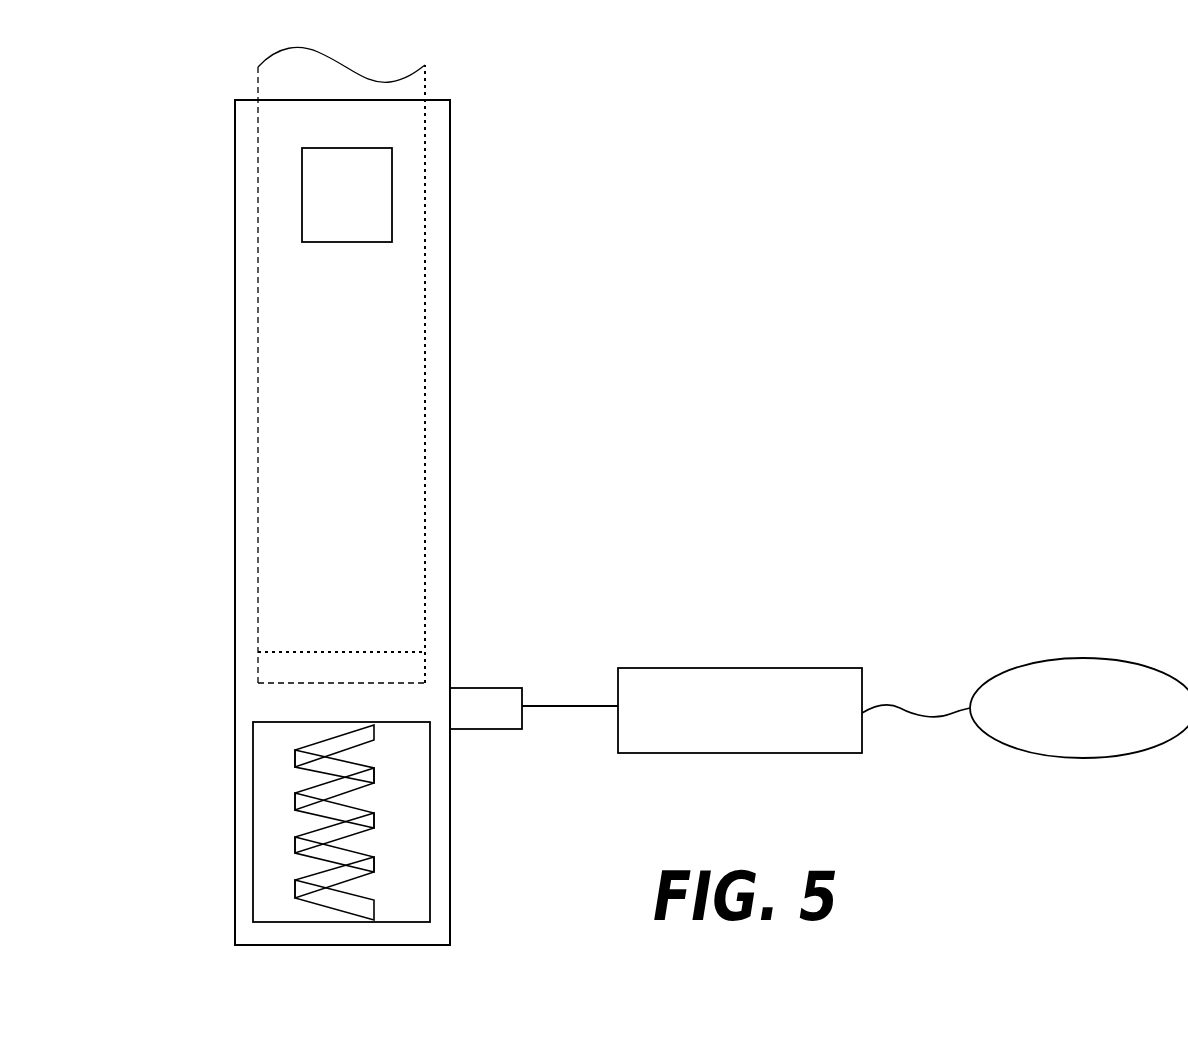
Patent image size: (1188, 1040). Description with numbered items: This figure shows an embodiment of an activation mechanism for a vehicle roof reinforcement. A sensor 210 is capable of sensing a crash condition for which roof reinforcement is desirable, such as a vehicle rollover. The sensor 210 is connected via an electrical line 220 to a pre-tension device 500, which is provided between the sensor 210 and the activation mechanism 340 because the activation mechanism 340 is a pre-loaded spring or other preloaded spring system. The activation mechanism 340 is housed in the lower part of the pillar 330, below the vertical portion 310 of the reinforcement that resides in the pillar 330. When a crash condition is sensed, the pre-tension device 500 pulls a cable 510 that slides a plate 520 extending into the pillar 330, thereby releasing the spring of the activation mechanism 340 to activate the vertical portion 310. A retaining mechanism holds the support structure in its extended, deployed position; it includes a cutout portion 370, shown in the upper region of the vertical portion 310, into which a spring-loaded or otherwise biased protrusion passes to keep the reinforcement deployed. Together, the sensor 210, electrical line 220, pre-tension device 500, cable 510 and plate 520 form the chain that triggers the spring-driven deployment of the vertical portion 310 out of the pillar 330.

The sensor 210 is at (1107, 658).
The electrical line 220 is at (927, 720).
The vertical portion 310 is at (425, 66).
The pillar 330 is at (440, 372).
The activation mechanism 340 is at (268, 812).
The cutout portion 370 is at (367, 193).
The pre-tension device 500 is at (750, 668).
The cable 510 is at (565, 708).
The plate 520 is at (483, 700).